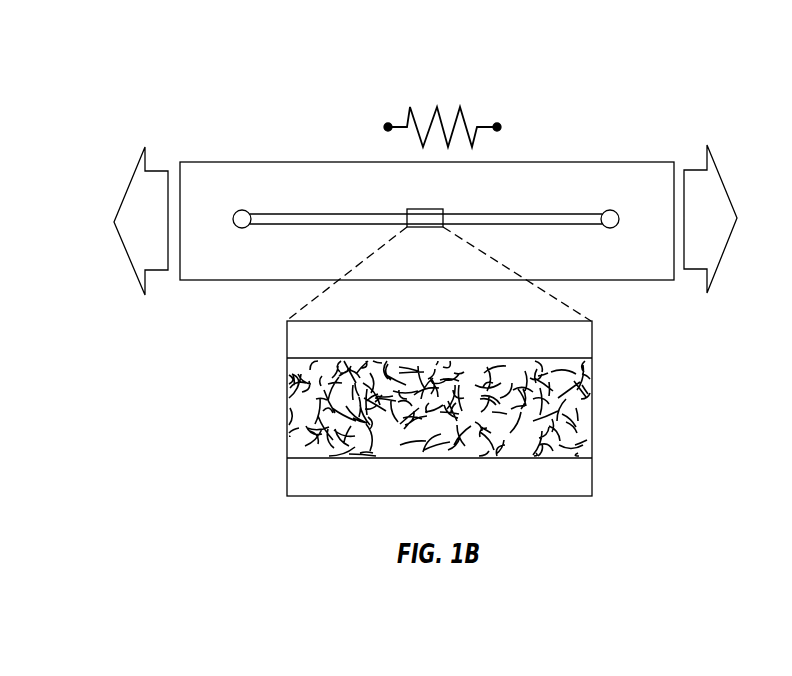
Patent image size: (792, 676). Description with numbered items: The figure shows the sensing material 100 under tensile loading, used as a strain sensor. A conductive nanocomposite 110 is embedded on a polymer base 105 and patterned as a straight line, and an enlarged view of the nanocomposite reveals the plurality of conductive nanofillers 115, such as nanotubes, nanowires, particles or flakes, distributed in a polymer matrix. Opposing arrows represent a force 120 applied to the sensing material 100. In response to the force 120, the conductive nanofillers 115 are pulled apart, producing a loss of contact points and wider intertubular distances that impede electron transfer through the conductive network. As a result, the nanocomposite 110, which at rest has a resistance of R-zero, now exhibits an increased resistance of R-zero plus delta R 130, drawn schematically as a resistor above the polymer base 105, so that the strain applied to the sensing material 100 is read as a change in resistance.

The sensing material 100 is at (253, 133).
The polymer base 105 is at (549, 180).
The conductive nanocomposite 110 is at (320, 211).
The conductive nanofillers 115 is at (301, 403).
The force 120 is at (128, 170).
The resistance R0 + ΔR 130 is at (406, 60).